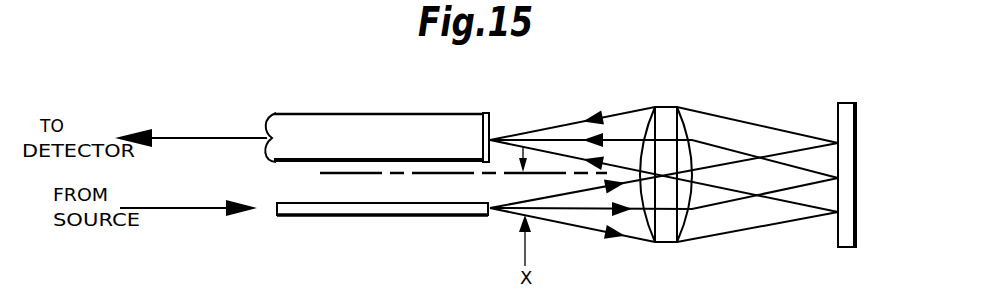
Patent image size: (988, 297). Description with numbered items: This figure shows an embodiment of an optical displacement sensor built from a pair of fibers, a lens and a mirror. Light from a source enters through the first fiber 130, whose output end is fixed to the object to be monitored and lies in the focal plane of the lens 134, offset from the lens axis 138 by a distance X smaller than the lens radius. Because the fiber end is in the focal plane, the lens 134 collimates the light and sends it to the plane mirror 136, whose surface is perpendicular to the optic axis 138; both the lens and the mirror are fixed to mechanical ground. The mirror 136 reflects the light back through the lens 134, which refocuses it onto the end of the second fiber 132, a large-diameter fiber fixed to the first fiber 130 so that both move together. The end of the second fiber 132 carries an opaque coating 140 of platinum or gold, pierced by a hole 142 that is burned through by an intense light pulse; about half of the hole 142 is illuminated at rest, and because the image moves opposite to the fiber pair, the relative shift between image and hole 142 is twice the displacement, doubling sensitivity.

The first fiber 130 is at (402, 218).
The second fiber 132 is at (382, 113).
The lens 134 is at (660, 243).
The plane mirror 136 is at (848, 116).
The lens axis 138 is at (433, 176).
The coating 140 is at (492, 113).
The hole 142 is at (543, 161).